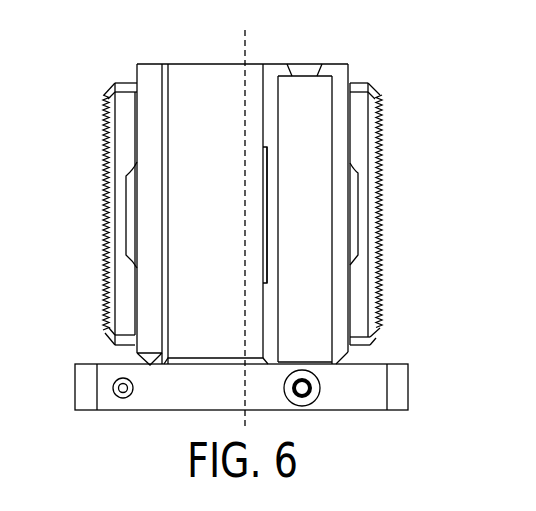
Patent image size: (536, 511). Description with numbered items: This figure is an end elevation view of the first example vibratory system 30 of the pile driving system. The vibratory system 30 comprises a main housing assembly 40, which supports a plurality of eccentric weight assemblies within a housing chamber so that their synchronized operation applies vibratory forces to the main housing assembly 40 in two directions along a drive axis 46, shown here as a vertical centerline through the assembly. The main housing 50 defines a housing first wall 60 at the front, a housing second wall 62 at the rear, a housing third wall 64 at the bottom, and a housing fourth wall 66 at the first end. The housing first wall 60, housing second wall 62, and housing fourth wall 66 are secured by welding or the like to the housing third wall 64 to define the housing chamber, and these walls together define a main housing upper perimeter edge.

The vibratory system 30 is at (428, 75).
The main housing assembly 40 is at (358, 72).
The drive axis 46 is at (247, 42).
The main housing 50 is at (148, 72).
The housing first wall 60 is at (160, 145).
The housing second wall 62 is at (340, 118).
The housing third wall 64 is at (348, 388).
The housing fourth wall 66 is at (212, 72).